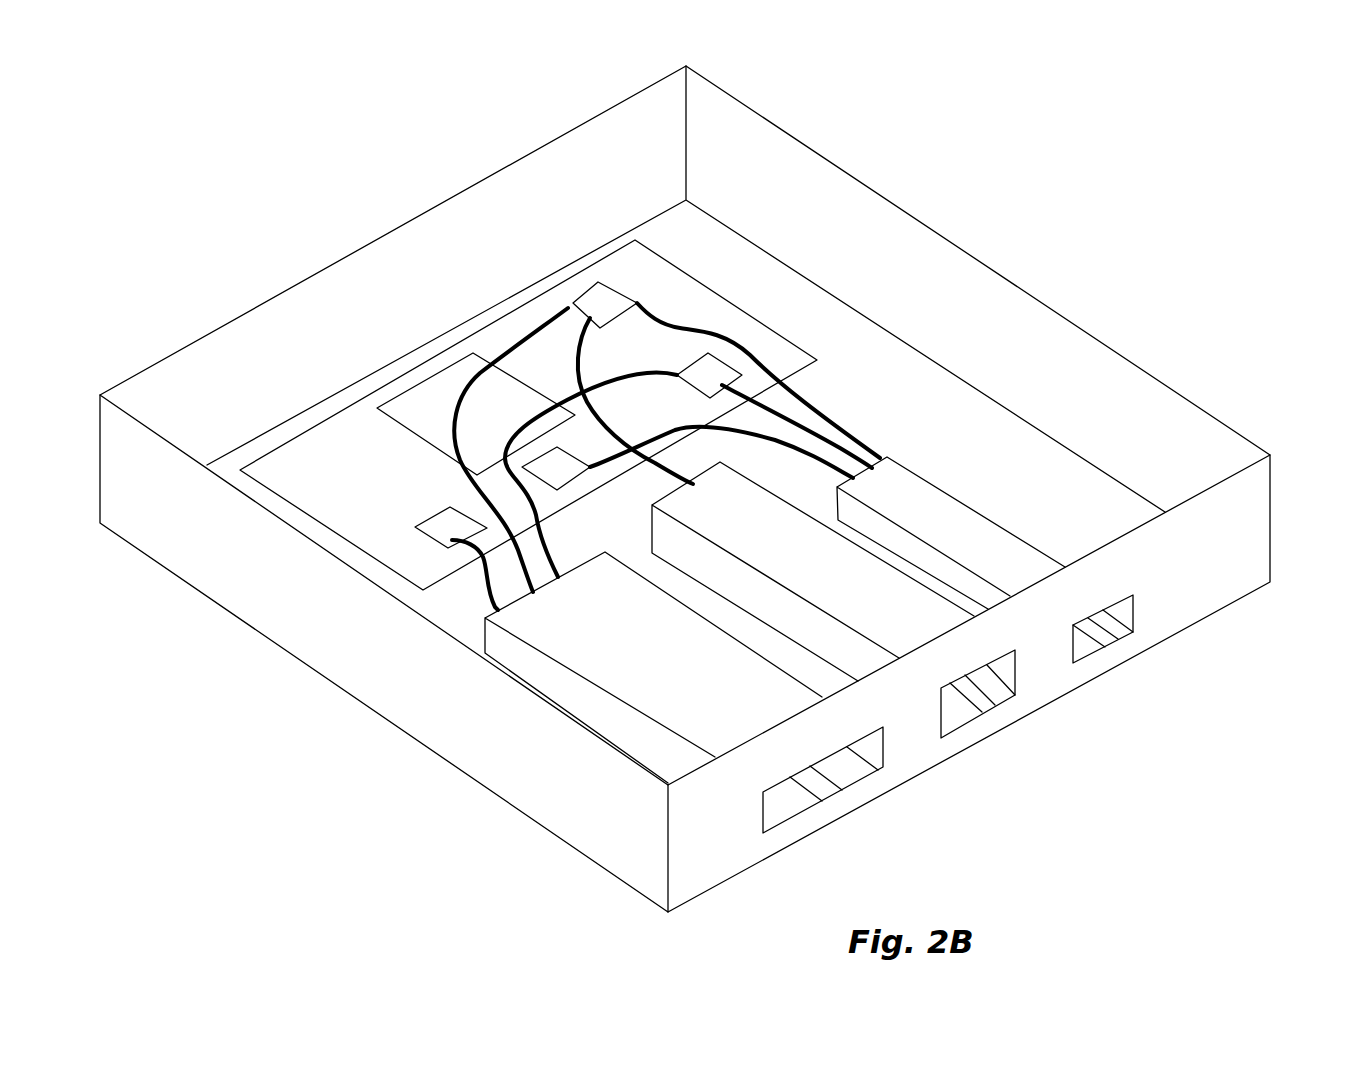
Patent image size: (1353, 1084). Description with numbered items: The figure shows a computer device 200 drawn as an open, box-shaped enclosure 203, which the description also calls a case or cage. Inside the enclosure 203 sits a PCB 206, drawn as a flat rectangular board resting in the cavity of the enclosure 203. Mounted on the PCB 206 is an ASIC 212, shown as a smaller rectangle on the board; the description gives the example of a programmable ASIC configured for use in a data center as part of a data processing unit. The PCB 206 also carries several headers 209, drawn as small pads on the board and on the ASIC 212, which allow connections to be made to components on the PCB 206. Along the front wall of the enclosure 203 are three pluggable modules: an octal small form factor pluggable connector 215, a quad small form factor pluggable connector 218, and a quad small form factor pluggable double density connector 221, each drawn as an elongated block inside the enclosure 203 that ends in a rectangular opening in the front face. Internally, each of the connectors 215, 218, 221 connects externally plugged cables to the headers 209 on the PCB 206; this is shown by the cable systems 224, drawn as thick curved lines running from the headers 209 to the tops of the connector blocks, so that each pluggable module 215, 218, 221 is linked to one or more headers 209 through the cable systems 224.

The computer device 200 is at (1243, 155).
The enclosure 203 is at (918, 219).
The PCB 206 is at (715, 295).
The headers 209 is at (580, 308).
The ASIC 212 is at (460, 368).
The octal small form factor pluggable (OSFP) connector 215 is at (763, 810).
The quad small form factor pluggable (QSFP) connector 218 is at (941, 732).
The quad small form factor pluggable double density (QSFP-DD) connector 221 is at (1073, 663).
The cable systems 224 is at (843, 423).